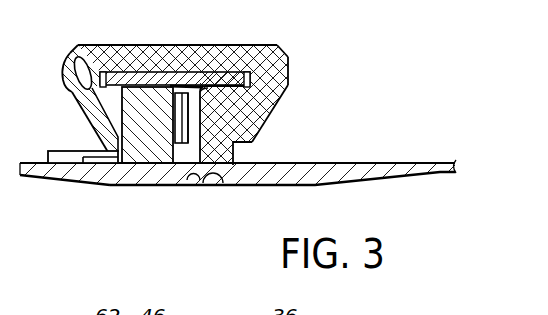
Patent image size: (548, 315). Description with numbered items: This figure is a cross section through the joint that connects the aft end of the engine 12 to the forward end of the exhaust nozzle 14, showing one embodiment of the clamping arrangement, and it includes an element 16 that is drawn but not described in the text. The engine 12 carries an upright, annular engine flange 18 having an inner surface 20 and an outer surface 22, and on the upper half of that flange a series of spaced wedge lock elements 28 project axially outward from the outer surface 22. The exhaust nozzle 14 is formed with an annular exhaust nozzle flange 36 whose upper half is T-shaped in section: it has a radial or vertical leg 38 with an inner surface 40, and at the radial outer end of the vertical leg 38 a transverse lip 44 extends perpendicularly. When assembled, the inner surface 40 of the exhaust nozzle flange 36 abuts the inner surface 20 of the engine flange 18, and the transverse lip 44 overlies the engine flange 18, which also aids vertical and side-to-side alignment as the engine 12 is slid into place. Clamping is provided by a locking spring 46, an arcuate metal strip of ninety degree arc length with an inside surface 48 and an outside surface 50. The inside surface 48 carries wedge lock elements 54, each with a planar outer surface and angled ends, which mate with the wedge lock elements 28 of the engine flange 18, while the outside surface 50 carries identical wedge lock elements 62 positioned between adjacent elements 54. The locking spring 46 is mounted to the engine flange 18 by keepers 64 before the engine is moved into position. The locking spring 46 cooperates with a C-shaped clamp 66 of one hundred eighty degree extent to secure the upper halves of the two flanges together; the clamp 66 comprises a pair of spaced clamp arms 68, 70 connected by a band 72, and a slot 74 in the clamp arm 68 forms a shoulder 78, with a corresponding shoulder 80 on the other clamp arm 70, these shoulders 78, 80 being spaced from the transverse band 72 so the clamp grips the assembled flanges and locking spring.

The engine 12 is at (66, 188).
The exhaust nozzle 14 is at (437, 161).
The cap member 16 is at (289, 45).
The engine flange 18 is at (197, 155).
The inner surface 20 is at (233, 183).
The outer surface 22 is at (167, 138).
The wedge lock elements 28 is at (195, 112).
The exhaust nozzle flange 36 is at (268, 152).
The vertical leg 38 is at (256, 129).
The inner surface 40 is at (203, 184).
The transverse lip 44 is at (177, 76).
The locking spring 46 is at (150, 108).
The inside surface 48 is at (232, 45).
The outside surface 50 is at (117, 117).
The wedge lock elements 54 is at (133, 187).
The wedge lock elements 62 is at (103, 187).
The keepers 64 is at (88, 152).
The C-shaped clamp 66 is at (337, 49).
The clamp arm 68 is at (72, 90).
The clamp arm 70 is at (258, 90).
The band 72 is at (137, 55).
The slot 74 is at (101, 58).
The shoulder 78 is at (72, 58).
The shoulder 80 is at (289, 70).